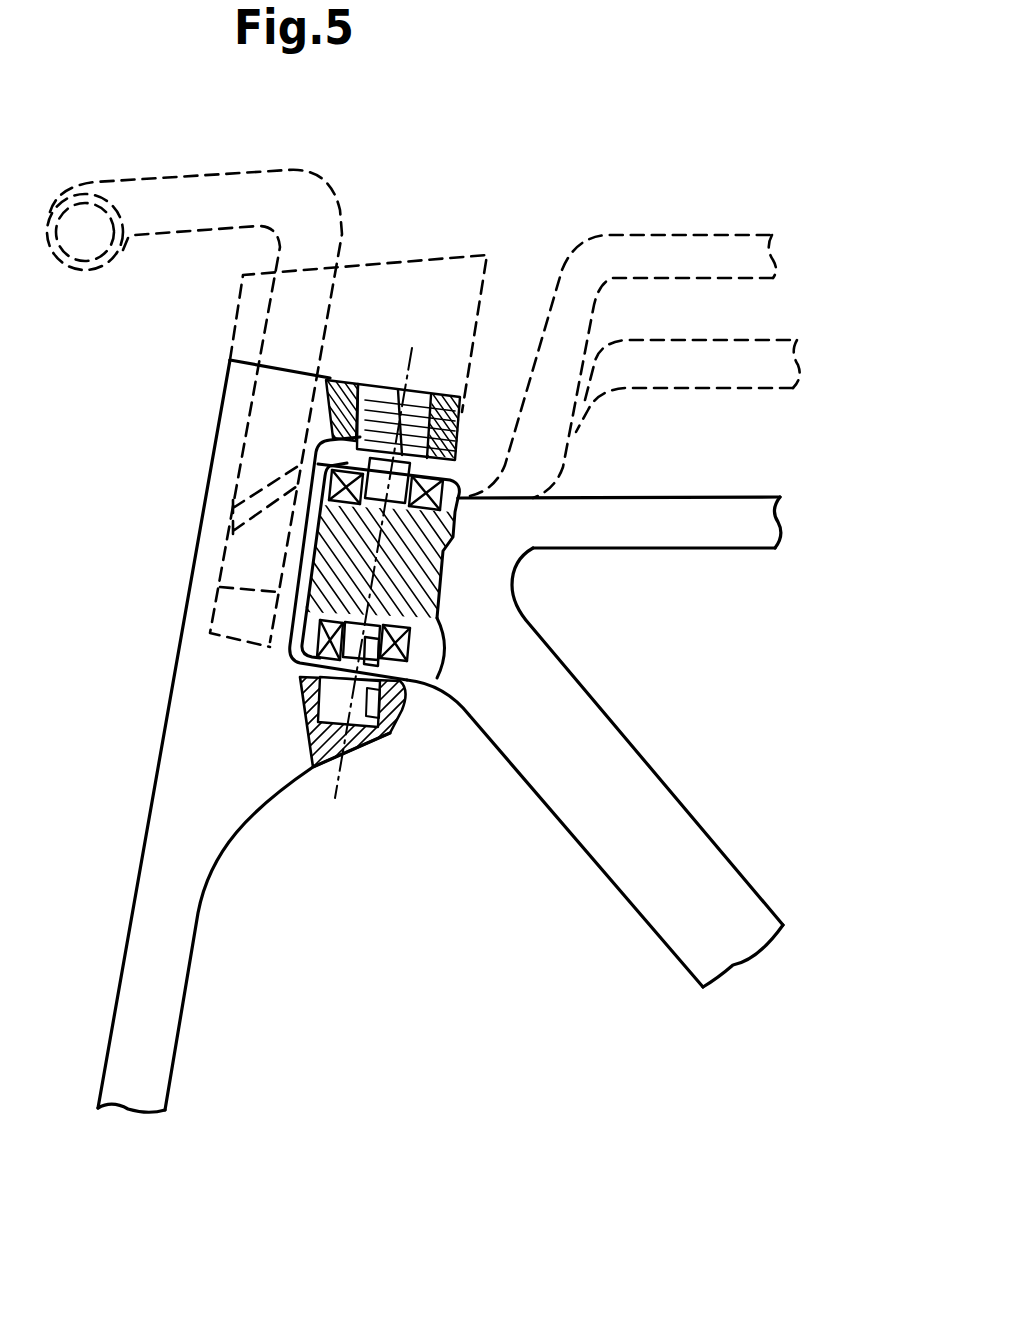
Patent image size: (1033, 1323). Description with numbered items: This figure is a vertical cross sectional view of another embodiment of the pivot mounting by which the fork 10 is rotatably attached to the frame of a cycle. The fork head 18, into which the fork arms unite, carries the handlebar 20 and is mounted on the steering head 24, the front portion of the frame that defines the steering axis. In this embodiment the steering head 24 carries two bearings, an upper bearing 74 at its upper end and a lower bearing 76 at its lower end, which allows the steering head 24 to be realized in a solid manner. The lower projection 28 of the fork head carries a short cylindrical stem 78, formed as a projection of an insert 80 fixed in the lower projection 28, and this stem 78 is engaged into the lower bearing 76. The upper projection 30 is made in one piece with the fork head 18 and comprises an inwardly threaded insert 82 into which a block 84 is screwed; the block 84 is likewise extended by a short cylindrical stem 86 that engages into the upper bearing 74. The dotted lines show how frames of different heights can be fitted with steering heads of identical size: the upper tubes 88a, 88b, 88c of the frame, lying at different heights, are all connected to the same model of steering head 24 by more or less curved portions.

The fork 10 is at (207, 908).
The fork head 18 is at (176, 750).
The handlebar 20 is at (90, 262).
The steering head 24 is at (420, 571).
The lower projection 28 is at (340, 760).
The upper projection 30 is at (462, 418).
The upper bearing 74 is at (455, 504).
The lower bearing 76 is at (430, 658).
The short cylindrical stem 78 is at (436, 622).
The insert 80 is at (388, 738).
The inwardly threaded insert 82 is at (368, 383).
The block 84 is at (415, 392).
The short cylindrical stem 86 is at (443, 548).
The upper tube 88a is at (697, 510).
The upper tube 88b is at (695, 365).
The upper tube 88c is at (695, 248).